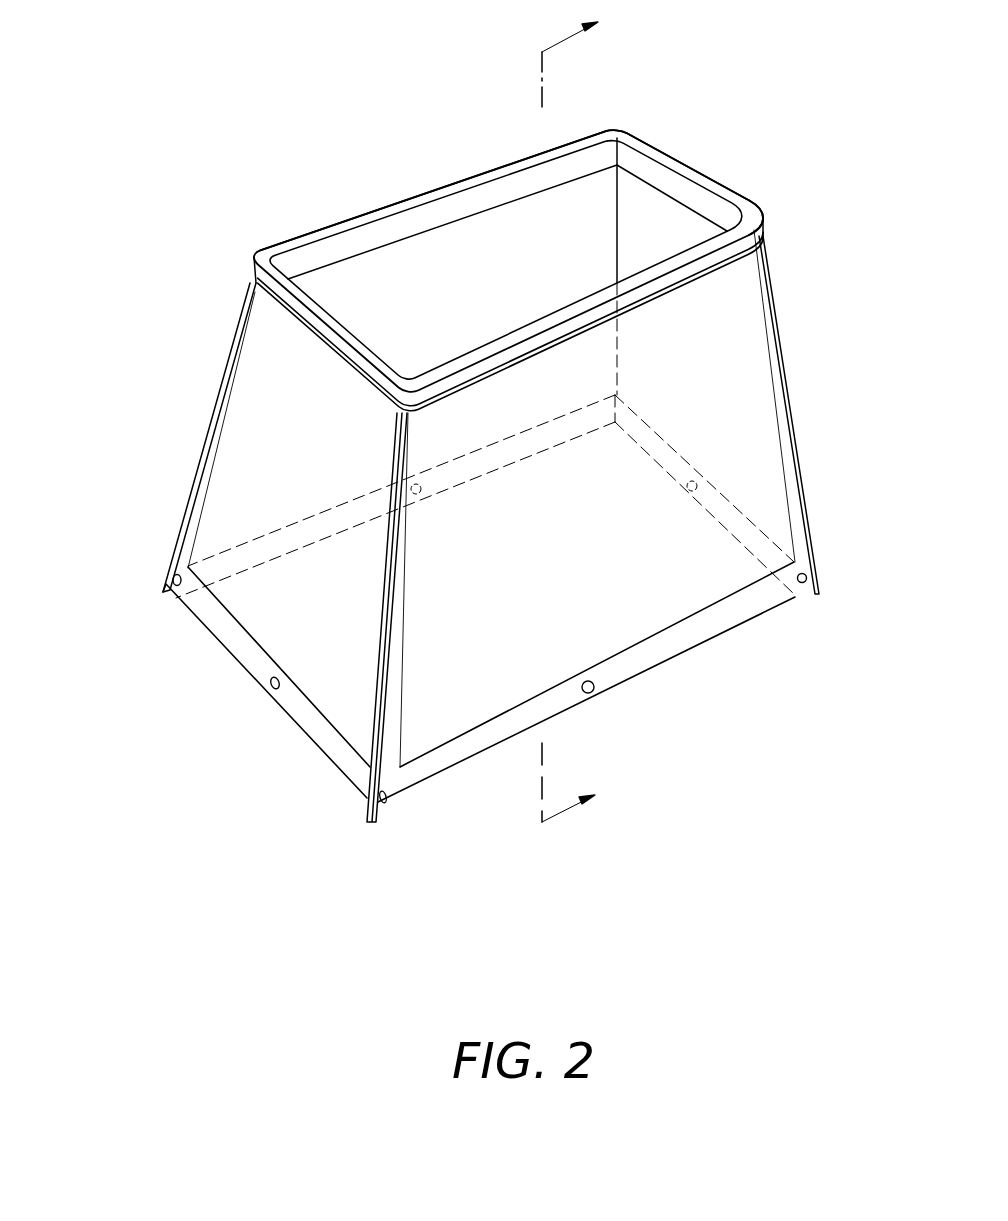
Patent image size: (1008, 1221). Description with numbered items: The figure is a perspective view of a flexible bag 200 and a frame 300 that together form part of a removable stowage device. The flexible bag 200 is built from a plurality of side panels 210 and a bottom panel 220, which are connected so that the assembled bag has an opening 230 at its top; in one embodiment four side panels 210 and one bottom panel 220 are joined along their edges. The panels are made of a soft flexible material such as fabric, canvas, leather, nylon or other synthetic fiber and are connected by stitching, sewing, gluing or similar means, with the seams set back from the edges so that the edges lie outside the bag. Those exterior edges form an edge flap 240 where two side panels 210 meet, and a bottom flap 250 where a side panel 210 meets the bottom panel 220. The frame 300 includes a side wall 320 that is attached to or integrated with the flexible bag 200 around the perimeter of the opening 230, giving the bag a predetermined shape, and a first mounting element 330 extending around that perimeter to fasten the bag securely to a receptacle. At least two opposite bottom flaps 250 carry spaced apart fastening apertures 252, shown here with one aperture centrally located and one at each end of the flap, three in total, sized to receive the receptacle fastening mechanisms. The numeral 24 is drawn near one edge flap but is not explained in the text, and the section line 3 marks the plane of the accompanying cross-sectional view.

The section line 3- 3 is at (580, 413).
The front leg 24 is at (390, 603).
The flexible bag 200 is at (738, 332).
The side panel 210 is at (515, 285).
The bottom panel 220 is at (240, 660).
The opening 230 is at (397, 293).
The edge flap 240 is at (208, 426).
The bottom flap 250 is at (485, 664).
The fastening aperture 252 is at (175, 588).
The frame 300 is at (717, 190).
The side wall 320 is at (451, 207).
The first mounting element 330 is at (762, 212).